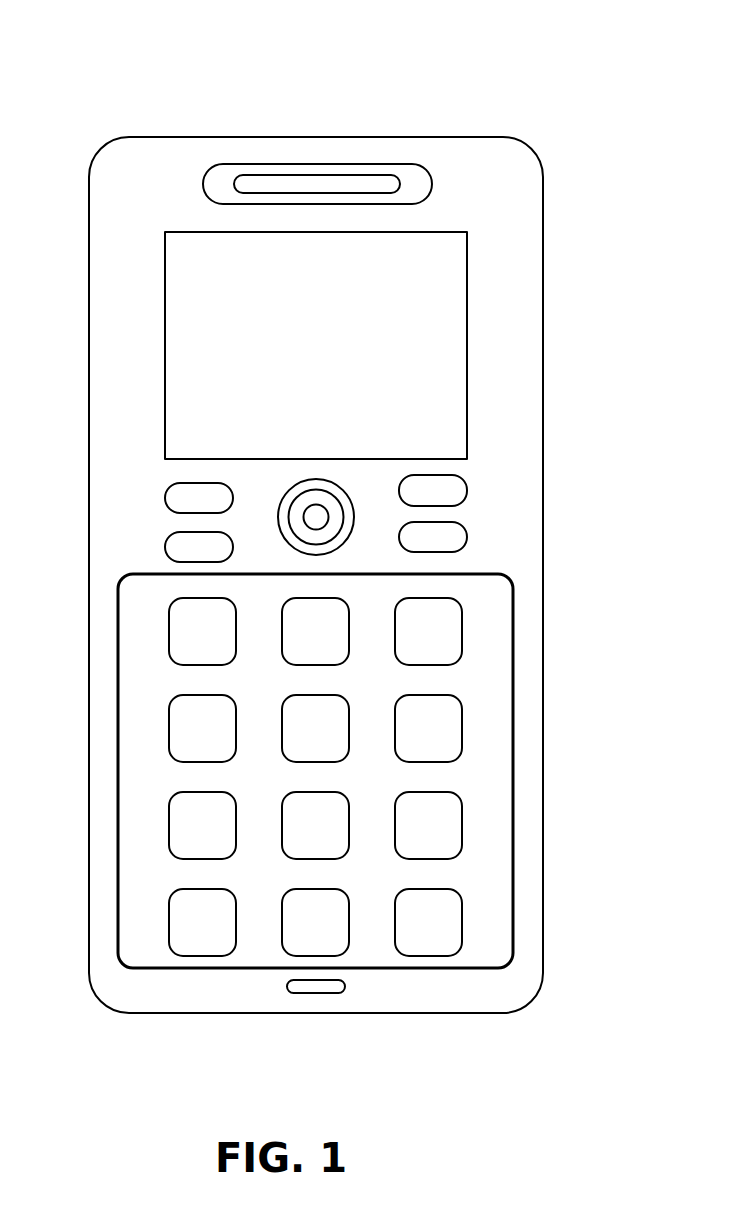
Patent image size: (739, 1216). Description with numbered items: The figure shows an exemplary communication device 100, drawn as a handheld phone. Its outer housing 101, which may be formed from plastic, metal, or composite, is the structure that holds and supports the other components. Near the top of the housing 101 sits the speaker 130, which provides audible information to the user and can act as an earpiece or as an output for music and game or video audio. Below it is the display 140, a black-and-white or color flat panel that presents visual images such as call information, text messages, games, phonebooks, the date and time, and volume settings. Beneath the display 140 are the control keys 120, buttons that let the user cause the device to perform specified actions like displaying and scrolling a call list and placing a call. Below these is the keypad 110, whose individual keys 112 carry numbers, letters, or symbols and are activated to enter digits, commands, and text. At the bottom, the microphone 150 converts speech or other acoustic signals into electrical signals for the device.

The communication device 100 is at (47, 73).
The housing 101 is at (543, 237).
The speaker 130 is at (307, 178).
The display 140 is at (316, 345).
The control keys 120 is at (562, 462).
The keypad 110 is at (118, 708).
The keys 112 is at (562, 592).
The microphone 150 is at (312, 983).